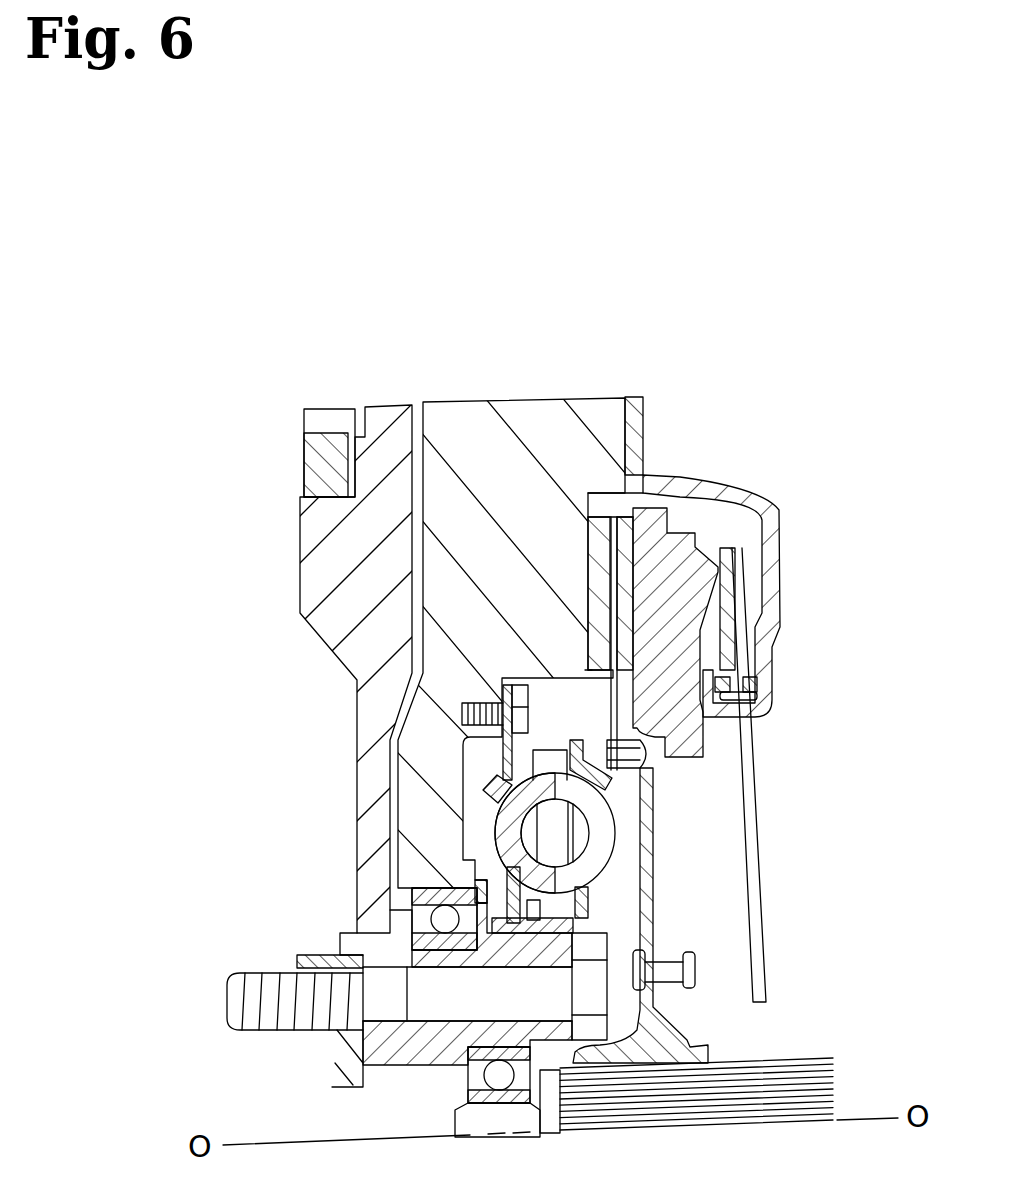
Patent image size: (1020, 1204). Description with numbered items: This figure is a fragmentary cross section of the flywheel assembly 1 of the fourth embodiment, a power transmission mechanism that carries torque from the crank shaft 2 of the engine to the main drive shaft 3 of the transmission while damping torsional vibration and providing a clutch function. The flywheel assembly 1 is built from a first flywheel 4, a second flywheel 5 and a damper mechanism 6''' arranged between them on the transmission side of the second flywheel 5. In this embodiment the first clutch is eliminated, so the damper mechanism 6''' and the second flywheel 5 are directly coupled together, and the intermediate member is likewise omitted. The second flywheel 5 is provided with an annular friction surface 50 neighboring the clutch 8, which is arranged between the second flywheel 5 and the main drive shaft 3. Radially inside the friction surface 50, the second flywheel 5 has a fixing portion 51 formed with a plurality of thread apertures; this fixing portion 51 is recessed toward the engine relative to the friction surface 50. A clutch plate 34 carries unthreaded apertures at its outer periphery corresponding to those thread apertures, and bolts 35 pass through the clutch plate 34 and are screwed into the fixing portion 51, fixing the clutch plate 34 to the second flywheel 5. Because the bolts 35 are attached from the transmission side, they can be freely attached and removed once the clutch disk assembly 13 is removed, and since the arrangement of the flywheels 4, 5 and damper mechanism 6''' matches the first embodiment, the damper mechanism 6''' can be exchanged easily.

The flywheel assembly 1 is at (727, 308).
The crank shaft 2 is at (323, 958).
The main drive shaft 3 is at (800, 1058).
The first flywheel 4 is at (330, 625).
The second flywheel 5 is at (445, 590).
The damper mechanism 6''' is at (700, 915).
The second clutch 8 is at (619, 499).
The second clutch disk assembly 13 is at (718, 972).
The clutch plate 34 is at (500, 745).
The bolts 35 is at (520, 712).
The annular friction surface 50 is at (613, 553).
The fixing portion 51 is at (498, 697).